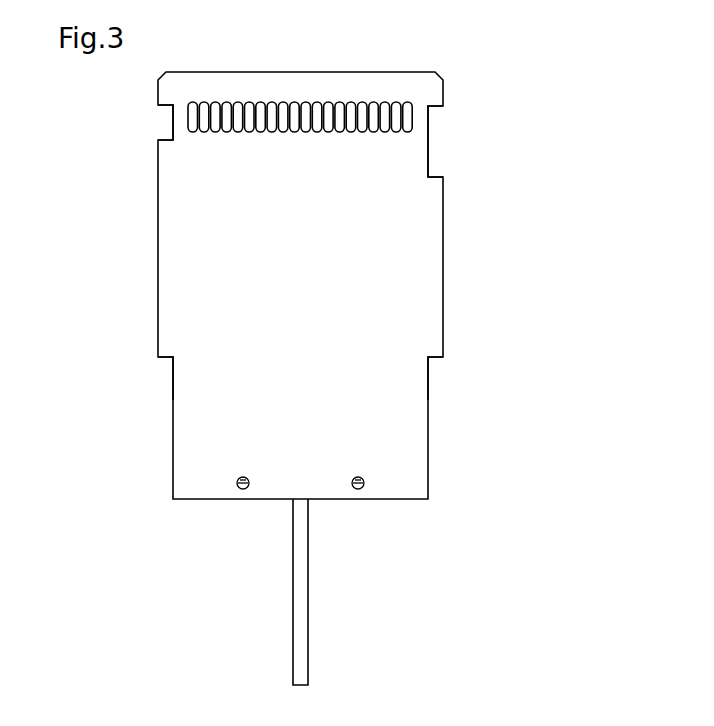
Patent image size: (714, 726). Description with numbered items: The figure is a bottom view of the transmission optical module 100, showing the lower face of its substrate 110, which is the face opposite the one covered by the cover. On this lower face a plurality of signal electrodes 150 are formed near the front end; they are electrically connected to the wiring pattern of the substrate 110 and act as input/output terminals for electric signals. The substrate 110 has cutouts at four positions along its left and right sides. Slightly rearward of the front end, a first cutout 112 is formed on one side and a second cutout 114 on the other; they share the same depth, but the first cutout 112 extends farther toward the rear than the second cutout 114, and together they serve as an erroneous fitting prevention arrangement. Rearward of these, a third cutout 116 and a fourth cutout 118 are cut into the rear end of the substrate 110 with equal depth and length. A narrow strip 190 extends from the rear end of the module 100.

The transmission optical module 100 is at (336, 378).
The substrate 110 is at (182, 298).
The first cutout 112 is at (443, 138).
The second cutout 114 is at (157, 122).
The third cutout 116 is at (440, 428).
The fourth cutout 118 is at (158, 412).
The signal electrodes 150 is at (351, 126).
The stem / connector strip 190 is at (302, 618).